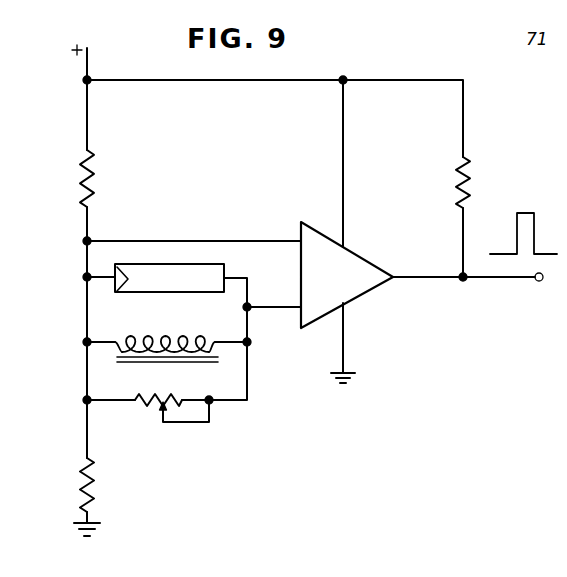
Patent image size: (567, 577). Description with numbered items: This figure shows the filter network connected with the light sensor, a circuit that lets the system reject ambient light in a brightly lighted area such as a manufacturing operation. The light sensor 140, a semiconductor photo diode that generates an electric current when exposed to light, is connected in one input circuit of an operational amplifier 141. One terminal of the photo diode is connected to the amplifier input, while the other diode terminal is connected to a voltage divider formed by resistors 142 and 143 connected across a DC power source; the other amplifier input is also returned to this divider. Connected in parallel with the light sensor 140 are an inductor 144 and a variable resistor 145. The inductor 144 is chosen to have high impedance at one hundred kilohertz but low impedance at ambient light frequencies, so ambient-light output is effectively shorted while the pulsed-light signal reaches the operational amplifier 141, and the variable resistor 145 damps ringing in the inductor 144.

The light sensor 140 is at (163, 285).
The operational amplifier 141 is at (356, 290).
The resistor 142 is at (79, 186).
The resistor 143 is at (78, 476).
The inductor 144 is at (187, 340).
The variable resistor 145 is at (148, 410).